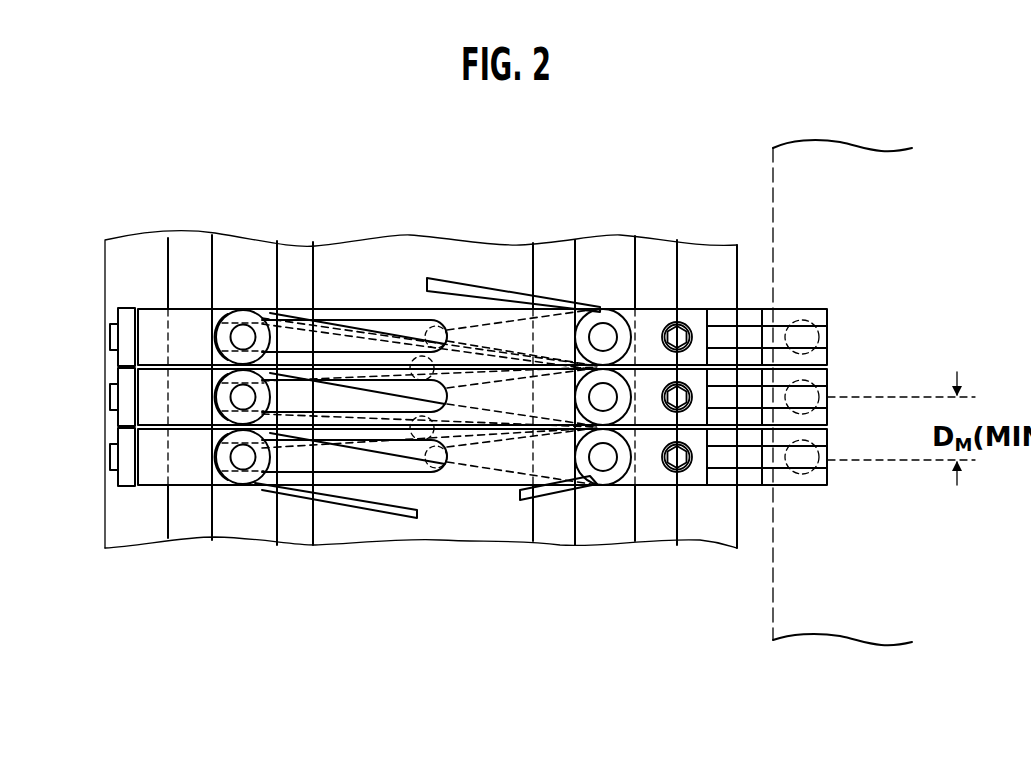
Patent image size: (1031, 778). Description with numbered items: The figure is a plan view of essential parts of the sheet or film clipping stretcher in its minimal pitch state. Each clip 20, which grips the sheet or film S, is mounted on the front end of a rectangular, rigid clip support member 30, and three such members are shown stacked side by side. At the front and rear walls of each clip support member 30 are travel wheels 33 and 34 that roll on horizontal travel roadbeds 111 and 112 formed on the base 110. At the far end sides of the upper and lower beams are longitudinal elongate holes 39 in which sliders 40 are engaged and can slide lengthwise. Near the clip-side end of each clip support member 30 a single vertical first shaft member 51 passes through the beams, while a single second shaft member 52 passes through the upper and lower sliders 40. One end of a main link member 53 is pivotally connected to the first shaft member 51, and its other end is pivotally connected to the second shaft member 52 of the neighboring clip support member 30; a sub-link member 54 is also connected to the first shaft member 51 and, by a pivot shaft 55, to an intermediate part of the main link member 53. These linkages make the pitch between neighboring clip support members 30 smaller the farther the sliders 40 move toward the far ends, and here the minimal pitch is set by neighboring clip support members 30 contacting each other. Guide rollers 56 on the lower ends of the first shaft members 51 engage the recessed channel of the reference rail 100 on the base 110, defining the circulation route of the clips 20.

The clip 20 is at (832, 335).
The clip support member 30 is at (643, 305).
The travel wheel 33 is at (118, 470).
The travel wheel 34 is at (114, 450).
The elongate hole 39 is at (360, 322).
The slider 40 is at (205, 312).
The first shaft member 51 is at (603, 330).
The second shaft member 52 is at (245, 326).
The main link member 53 is at (490, 302).
The sub-link member 54 is at (500, 480).
The pivot shaft 55 is at (437, 330).
The guide roller 56 is at (590, 490).
The reference rail 100 is at (613, 528).
The base 110 is at (445, 545).
The travel roadbed 111 is at (713, 535).
The travel roadbed 112 is at (120, 550).
The sheet or film S is at (836, 160).